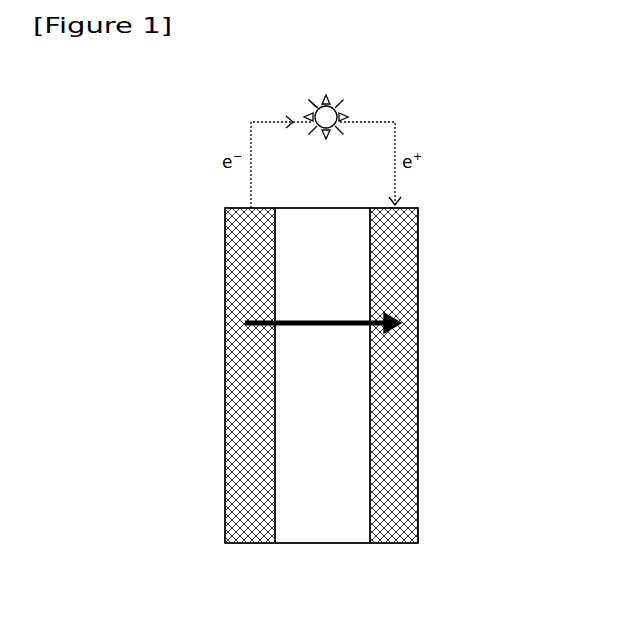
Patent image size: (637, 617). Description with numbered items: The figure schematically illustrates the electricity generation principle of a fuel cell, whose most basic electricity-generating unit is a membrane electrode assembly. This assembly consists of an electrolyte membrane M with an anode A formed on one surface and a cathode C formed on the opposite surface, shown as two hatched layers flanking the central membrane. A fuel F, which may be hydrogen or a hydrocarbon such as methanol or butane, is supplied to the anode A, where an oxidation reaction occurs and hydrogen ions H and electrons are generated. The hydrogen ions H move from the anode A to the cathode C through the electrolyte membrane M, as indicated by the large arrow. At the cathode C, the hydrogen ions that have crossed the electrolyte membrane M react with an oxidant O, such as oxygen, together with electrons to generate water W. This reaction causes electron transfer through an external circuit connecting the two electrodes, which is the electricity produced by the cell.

The anode A is at (250, 543).
The electrolyte membrane M is at (322, 543).
The cathode C is at (398, 543).
The hydrogen ions H is at (323, 337).
The fuel F is at (210, 362).
The oxidant O is at (432, 362).
The water W is at (428, 410).